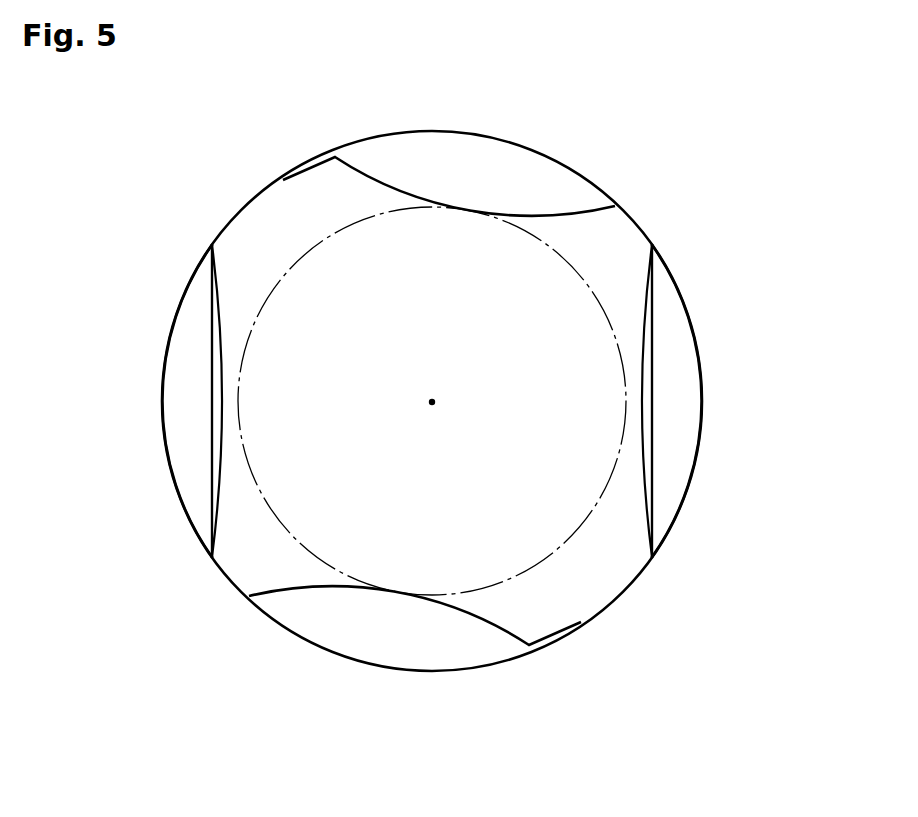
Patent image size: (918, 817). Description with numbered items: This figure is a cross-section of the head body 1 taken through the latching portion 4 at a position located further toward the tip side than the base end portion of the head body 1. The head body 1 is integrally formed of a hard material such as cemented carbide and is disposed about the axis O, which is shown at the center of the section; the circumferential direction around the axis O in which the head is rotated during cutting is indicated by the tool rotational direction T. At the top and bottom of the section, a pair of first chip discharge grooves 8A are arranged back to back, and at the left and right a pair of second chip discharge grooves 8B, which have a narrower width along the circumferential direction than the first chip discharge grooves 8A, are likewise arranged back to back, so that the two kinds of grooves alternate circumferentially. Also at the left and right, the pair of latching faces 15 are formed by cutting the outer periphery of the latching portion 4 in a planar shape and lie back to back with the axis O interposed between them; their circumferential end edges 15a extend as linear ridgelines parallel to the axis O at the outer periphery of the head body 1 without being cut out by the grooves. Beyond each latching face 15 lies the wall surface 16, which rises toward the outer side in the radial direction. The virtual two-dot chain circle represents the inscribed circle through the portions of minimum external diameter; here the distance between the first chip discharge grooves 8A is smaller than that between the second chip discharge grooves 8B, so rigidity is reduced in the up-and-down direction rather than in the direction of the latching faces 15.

The head body 1 is at (735, 160).
The latching portion 4 is at (662, 162).
The first chip discharge groove 8A is at (472, 200).
The second chip discharge groove 8B is at (202, 390).
The latching face 15 is at (210, 453).
The end edge 15a is at (212, 247).
The wall surface 16 is at (185, 328).
The axis O is at (435, 400).
The tool rotational direction T is at (676, 630).